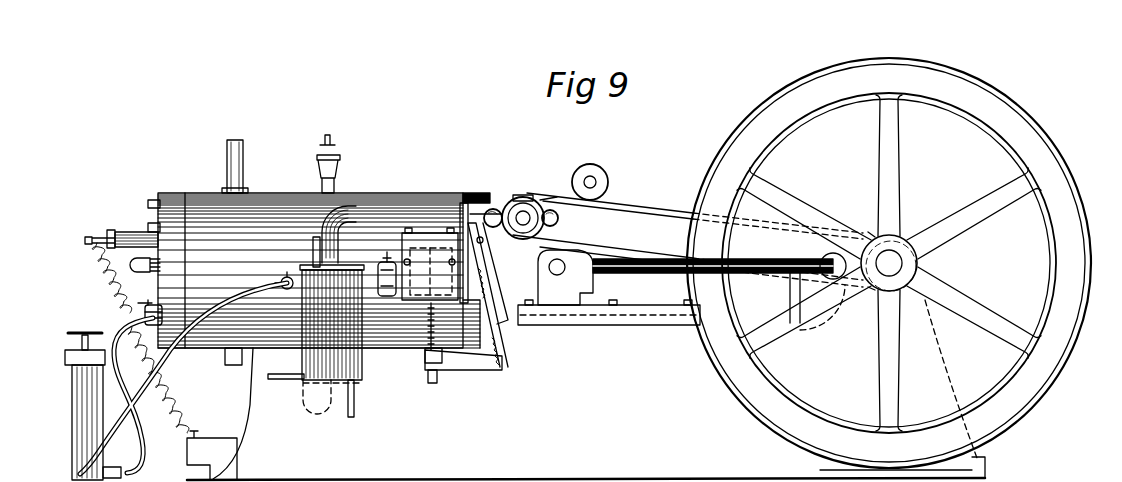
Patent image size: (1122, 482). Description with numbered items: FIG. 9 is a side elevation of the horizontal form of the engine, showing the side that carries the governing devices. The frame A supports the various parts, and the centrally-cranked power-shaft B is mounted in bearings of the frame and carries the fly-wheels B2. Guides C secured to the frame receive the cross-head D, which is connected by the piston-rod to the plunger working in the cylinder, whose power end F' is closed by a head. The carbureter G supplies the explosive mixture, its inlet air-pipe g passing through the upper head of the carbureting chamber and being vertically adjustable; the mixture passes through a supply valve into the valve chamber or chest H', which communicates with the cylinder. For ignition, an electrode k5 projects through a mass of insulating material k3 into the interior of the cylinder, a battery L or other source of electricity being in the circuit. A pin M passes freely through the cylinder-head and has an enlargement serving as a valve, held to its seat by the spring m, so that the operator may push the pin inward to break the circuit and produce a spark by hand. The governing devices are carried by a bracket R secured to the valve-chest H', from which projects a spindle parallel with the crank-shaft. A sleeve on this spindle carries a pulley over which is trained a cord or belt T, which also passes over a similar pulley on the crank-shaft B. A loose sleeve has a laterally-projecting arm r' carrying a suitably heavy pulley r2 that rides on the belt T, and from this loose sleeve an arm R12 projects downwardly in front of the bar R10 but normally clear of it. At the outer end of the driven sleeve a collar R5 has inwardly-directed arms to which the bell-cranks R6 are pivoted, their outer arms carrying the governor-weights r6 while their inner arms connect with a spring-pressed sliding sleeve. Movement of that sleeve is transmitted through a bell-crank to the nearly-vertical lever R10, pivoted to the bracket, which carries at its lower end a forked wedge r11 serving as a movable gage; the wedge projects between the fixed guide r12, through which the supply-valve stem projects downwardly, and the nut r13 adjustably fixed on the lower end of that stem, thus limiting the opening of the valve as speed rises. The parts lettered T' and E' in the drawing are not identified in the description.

The power end of the cylinder F' is at (324, 250).
The pin M is at (158, 253).
The inlet air-pipe g is at (320, 227).
The carbureter G is at (363, 375).
The electrode k5 is at (95, 236).
The insulating material k3 is at (130, 230).
The spring m is at (147, 301).
The battery L is at (220, 414).
The valve chamber or chest H' is at (430, 249).
The lever R10 is at (503, 358).
The arm R12 is at (507, 320).
The forked wedge r11 is at (462, 372).
The fixed guide r12 is at (428, 345).
The nut r13 is at (437, 385).
The bracket R is at (510, 206).
The collar R5 is at (535, 197).
The governor-weights r6 is at (500, 210).
The arm r' is at (556, 169).
The pulley r2 is at (602, 168).
The connecting rod T' is at (695, 207).
The bell-cranks R6 is at (632, 250).
The cross-head D is at (565, 277).
The guides C is at (663, 277).
The bed plate E' is at (609, 327).
The frame A is at (586, 413).
The fly-wheels B2 is at (803, 84).
The power-shaft B is at (908, 268).
The cord or belt T is at (895, 239).